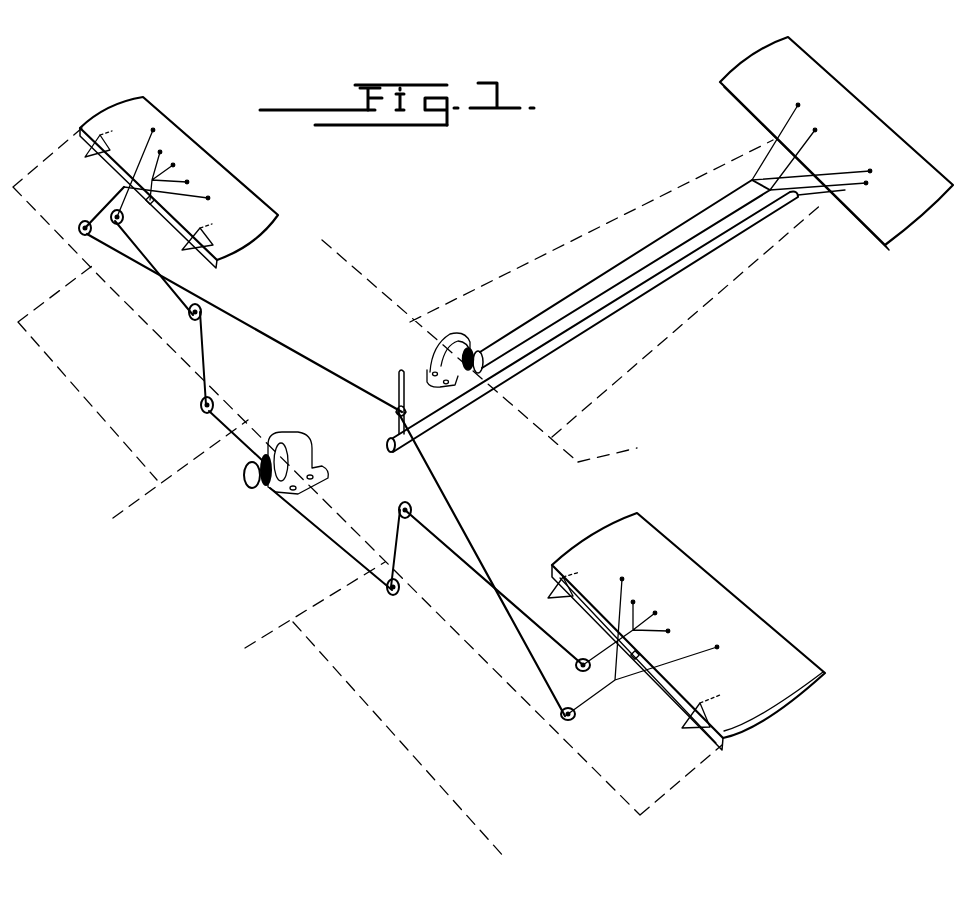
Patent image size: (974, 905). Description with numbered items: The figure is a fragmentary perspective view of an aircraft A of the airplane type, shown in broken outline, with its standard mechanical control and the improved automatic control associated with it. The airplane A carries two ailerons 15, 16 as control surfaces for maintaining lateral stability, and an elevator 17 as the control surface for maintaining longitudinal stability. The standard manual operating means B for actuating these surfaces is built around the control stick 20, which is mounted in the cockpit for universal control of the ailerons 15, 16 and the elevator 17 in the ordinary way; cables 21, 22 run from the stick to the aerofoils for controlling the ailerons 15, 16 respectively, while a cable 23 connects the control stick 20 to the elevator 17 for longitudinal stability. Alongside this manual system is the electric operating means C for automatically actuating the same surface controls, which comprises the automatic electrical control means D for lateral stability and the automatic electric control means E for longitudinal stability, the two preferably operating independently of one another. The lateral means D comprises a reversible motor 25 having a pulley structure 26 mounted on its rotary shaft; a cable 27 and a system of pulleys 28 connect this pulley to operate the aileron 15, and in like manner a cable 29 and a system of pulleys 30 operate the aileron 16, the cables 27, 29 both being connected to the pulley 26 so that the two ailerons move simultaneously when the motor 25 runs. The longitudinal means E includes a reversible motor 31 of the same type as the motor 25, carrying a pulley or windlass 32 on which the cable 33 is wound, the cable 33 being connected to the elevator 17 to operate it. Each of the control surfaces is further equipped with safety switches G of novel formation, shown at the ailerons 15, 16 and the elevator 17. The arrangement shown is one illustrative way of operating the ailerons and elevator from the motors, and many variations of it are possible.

The aileron 15 is at (136, 114).
The aileron 16 is at (785, 660).
The elevator 17 is at (870, 142).
The control stick 20 is at (398, 374).
The cable 21 is at (290, 345).
The cable 22 is at (463, 521).
The cable 23 is at (606, 318).
The motor 25 is at (303, 459).
The pulley structure 26 is at (253, 487).
The cable 27 is at (200, 360).
The system of pulleys 28 is at (216, 400).
The cable 29 is at (466, 575).
The system of pulleys 30 is at (413, 548).
The reversible motor 31 is at (453, 339).
The pulley or windlass 32 is at (470, 386).
The cable 33 is at (602, 262).
The aircraft A is at (418, 493).
The standard manual operating means B is at (396, 402).
The electric operating means C is at (455, 332).
The automatic electrical control means D is at (284, 436).
The automatic electric control means E is at (470, 340).
The safety switches G is at (150, 206).